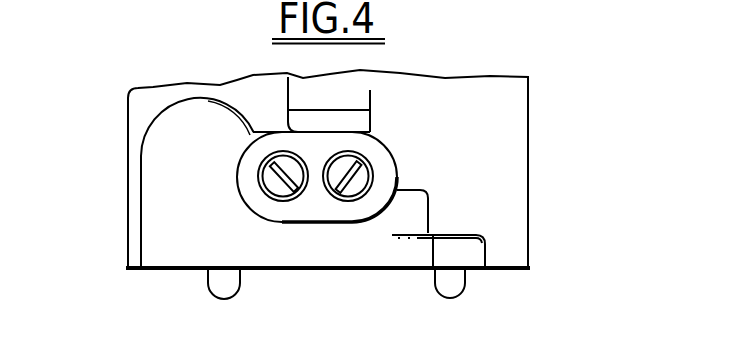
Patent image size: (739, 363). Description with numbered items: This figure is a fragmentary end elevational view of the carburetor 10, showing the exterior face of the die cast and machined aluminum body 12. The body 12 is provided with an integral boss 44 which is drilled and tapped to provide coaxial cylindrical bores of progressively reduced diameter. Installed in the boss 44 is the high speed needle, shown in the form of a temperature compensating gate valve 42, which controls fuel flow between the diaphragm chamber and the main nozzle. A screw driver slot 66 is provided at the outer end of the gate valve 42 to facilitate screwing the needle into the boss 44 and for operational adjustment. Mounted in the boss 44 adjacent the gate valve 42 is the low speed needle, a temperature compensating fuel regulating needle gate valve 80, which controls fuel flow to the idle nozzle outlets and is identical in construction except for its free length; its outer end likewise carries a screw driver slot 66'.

The carburetor 10 is at (100, 86).
The body 12 is at (120, 162).
The temperature compensating gate valve 42 is at (380, 178).
The boss 44 is at (388, 148).
The screw driver slot 66 is at (377, 141).
The screw driver slot 66' is at (239, 161).
The temperature compensating fuel regulating needle gate valve 80 is at (252, 185).